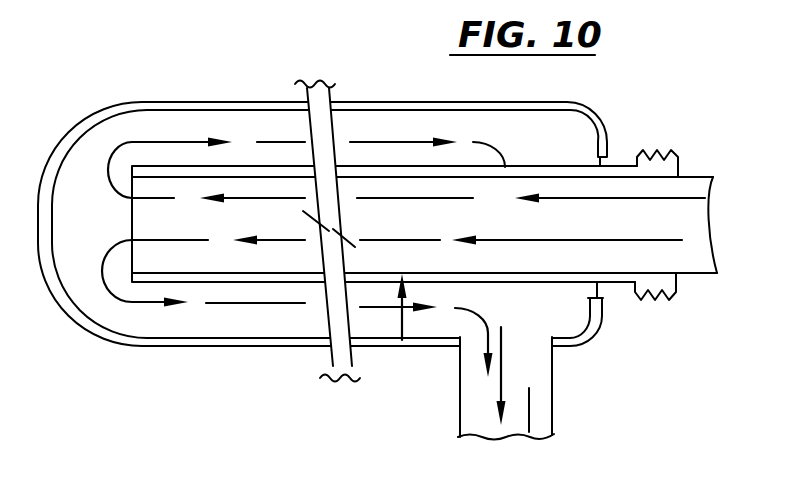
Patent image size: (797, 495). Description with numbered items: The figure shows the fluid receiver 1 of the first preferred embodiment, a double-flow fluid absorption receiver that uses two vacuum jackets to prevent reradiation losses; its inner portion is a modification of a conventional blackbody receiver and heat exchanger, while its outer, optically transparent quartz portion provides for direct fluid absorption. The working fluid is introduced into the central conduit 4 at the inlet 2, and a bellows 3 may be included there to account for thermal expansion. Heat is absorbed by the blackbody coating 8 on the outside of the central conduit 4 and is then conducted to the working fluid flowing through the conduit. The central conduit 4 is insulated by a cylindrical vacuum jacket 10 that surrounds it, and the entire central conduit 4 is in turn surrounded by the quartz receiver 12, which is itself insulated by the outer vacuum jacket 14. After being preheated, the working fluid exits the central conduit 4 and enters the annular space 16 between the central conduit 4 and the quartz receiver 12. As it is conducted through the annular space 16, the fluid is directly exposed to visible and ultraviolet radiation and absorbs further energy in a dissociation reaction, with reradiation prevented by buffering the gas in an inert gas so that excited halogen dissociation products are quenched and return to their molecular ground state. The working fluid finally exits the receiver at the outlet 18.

The fluid receiver 1 is at (159, 29).
The inlet 2 is at (708, 224).
The bellows 3 is at (651, 153).
The central conduit 4 is at (548, 193).
The blackbody coating 8 is at (402, 340).
The cylindrical vacuum jacket 10 is at (199, 284).
The quartz receiver 12 is at (360, 109).
The outer vacuum jacket 14 is at (226, 101).
The annular space 16 is at (158, 321).
The outlet 18 is at (515, 432).